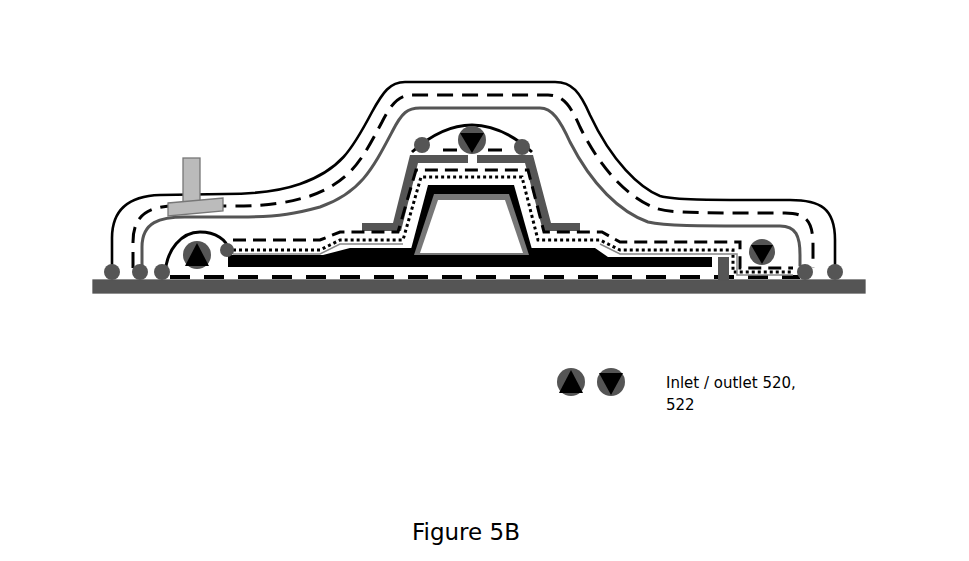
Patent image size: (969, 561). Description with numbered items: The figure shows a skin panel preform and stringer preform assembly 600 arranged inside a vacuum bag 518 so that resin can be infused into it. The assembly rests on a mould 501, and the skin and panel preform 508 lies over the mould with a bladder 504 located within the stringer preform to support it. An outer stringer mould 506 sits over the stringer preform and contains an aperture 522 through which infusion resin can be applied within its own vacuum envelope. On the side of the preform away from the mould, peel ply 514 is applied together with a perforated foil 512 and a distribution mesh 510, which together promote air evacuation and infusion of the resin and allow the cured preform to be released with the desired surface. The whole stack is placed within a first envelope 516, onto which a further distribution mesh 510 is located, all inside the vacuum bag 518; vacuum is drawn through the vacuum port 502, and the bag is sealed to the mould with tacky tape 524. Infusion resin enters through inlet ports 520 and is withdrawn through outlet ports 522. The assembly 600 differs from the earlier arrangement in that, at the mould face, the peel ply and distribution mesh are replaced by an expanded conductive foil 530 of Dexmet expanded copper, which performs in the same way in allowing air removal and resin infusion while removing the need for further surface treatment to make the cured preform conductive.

The mould 501 is at (612, 293).
The vacuum port 502 is at (184, 181).
The bladder 504 is at (436, 207).
The outer stringer mould 506 is at (543, 168).
The skin and panel preform 508 is at (565, 255).
The distribution mesh 510 is at (278, 205).
The perforated foil 512 is at (320, 250).
The peel ply 514 is at (332, 262).
The first envelope 516 is at (785, 222).
The vacuum bag 518 is at (370, 118).
The inlet port 520 is at (188, 263).
The outlet port 522 is at (472, 138).
The tacky tape 524 is at (473, 297).
The expanded conductive foil 530 is at (540, 268).
The assembly 600 is at (473, 218).